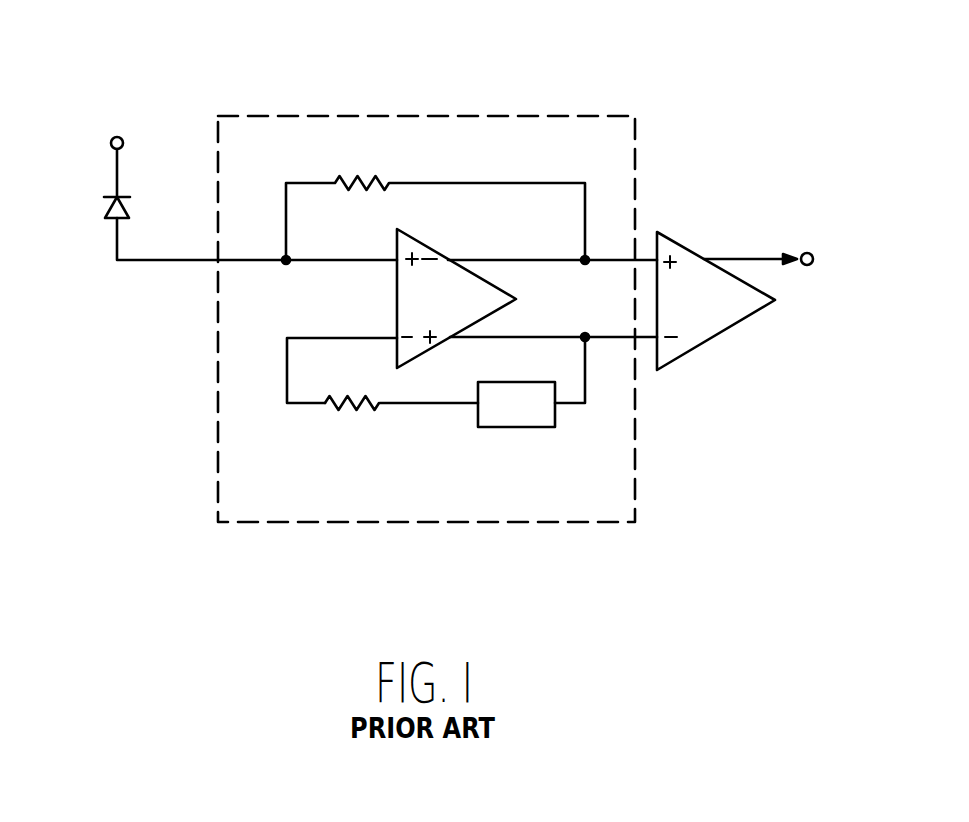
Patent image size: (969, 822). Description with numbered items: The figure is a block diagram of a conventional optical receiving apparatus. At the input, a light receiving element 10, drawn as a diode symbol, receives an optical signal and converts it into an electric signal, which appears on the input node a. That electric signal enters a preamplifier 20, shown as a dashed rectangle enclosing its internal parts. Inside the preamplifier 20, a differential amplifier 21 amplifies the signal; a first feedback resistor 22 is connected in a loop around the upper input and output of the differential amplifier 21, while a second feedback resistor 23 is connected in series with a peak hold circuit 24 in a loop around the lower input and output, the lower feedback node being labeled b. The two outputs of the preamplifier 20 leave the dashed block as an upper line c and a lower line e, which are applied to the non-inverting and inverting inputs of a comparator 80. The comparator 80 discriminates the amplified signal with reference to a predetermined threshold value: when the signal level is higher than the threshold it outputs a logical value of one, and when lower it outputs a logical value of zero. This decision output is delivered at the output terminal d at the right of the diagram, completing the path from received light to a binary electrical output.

The light receiving element 10 is at (108, 210).
The preamplifier 20 is at (340, 58).
The differential amplifier 21 is at (420, 243).
The feedback resistor 22 is at (365, 173).
The feedback resistor 23 is at (347, 408).
The peak hold circuit 24 is at (512, 427).
The comparator 80 is at (707, 342).
The input signal node a is at (173, 261).
The lower feedback node b is at (442, 405).
The upper output line c is at (610, 257).
The comparator output d is at (745, 259).
The lower output line e is at (613, 337).